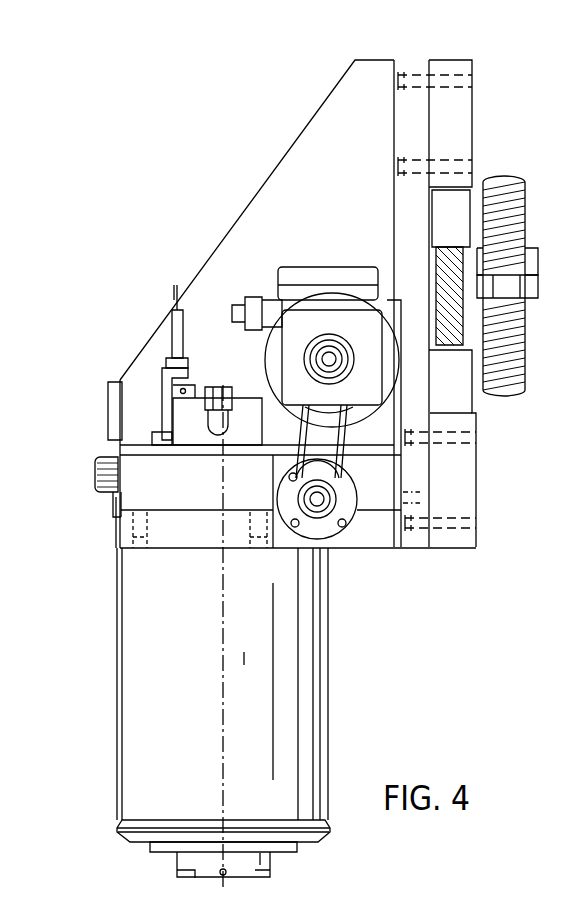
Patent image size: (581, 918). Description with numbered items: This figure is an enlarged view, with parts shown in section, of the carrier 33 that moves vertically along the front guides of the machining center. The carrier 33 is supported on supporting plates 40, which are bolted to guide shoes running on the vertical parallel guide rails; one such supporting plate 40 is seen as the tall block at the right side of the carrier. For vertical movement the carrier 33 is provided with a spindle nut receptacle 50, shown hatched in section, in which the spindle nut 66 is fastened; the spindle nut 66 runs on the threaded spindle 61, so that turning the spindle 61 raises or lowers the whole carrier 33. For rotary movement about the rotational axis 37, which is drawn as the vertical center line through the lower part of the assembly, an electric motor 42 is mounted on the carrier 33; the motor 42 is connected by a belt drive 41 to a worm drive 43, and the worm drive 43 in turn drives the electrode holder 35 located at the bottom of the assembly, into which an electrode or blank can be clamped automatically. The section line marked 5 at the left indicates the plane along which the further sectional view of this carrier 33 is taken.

The section line 5- 5 is at (47, 290).
The carrier 33 is at (253, 200).
The electrode holder 35 is at (194, 860).
The rotational axis 37 is at (222, 648).
The supporting plate 40 is at (460, 125).
The belt drive 41 is at (345, 468).
The electric motor 42 is at (327, 298).
The worm drive 43 is at (157, 497).
The spindle nut receptacle 50 is at (458, 245).
The spindle 61 is at (525, 200).
The spindle nut 66 is at (538, 292).